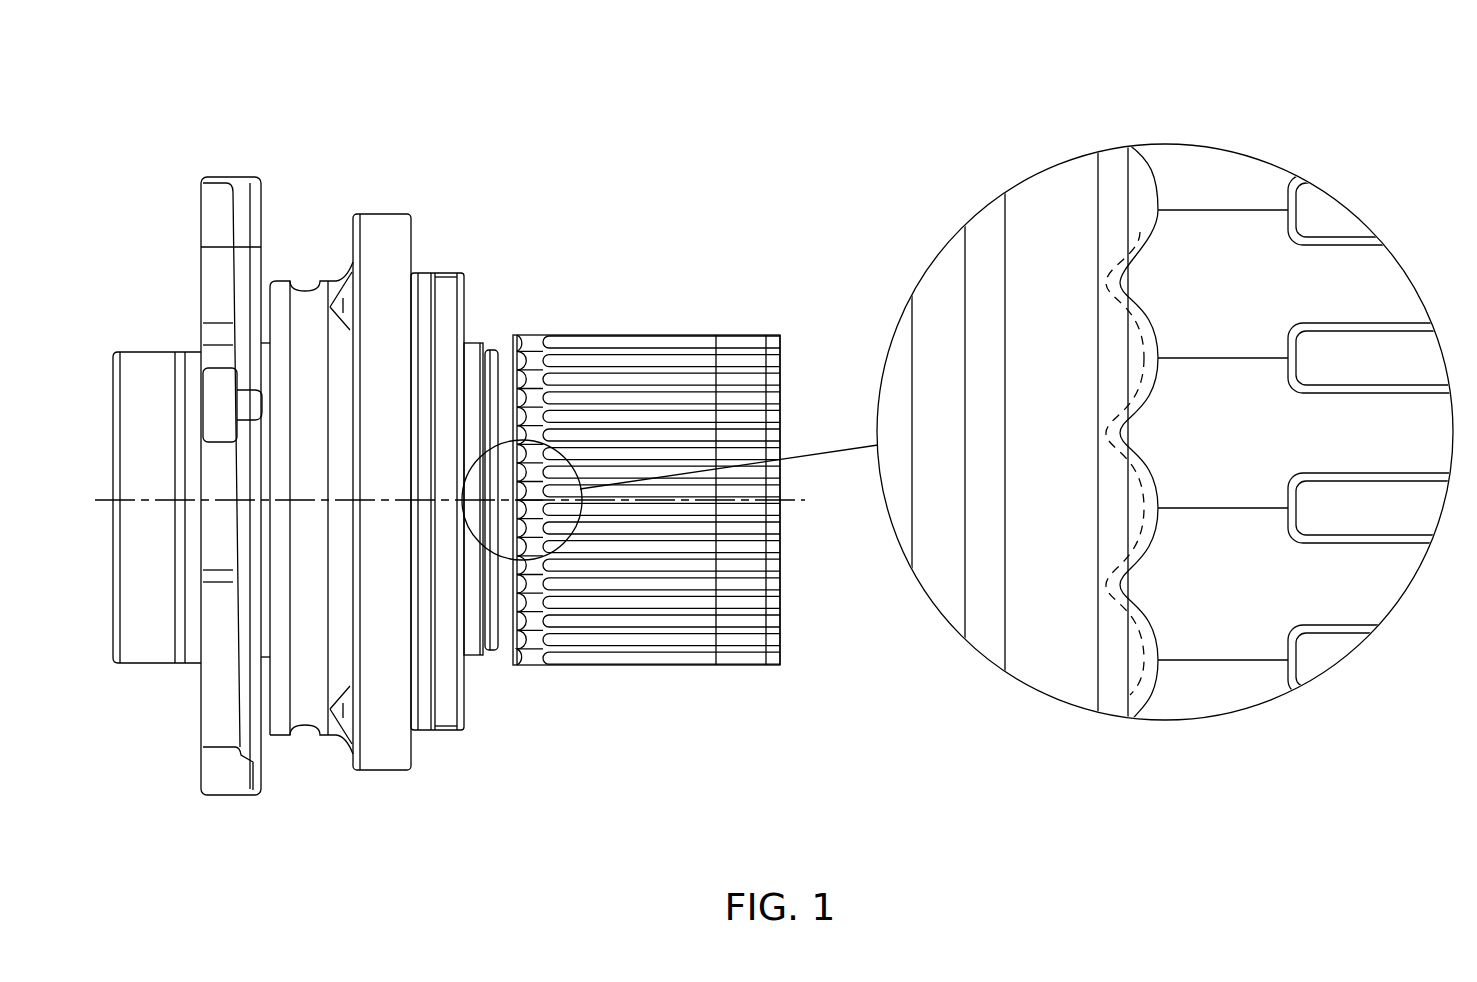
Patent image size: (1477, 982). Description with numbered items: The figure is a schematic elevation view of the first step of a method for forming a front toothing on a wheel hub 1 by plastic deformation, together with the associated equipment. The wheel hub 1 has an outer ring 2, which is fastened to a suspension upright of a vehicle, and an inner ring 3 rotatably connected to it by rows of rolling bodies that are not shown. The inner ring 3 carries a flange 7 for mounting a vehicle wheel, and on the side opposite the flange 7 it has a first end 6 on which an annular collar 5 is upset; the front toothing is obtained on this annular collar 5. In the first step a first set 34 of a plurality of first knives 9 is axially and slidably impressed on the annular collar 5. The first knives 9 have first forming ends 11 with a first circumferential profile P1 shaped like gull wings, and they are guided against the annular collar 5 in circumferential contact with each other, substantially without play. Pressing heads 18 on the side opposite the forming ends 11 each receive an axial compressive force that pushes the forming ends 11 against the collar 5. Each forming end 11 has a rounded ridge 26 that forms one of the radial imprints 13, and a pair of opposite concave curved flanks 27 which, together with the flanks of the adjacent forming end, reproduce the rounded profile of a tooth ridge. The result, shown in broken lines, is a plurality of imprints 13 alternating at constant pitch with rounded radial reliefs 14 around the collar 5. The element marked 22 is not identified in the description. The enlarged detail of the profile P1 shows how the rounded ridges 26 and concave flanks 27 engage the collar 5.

The wheel hub 1 is at (436, 152).
The outer ring 2 is at (327, 720).
The inner ring 3 is at (470, 652).
The annular collar 5 is at (520, 362).
The first end 6 is at (513, 688).
The flange 7 is at (245, 688).
The first knives 9 is at (690, 392).
The first forming ends 11 is at (540, 405).
The imprints 13 is at (1103, 263).
The reliefs 14 is at (1133, 363).
The pressing heads 18 is at (786, 360).
The end face 22 is at (786, 405).
The rounded ridge 26 is at (1123, 283).
The concave curved flanks 27 is at (1143, 212).
The first set of first knives 34 is at (790, 690).
The first circumferential profile P1 is at (1165, 235).